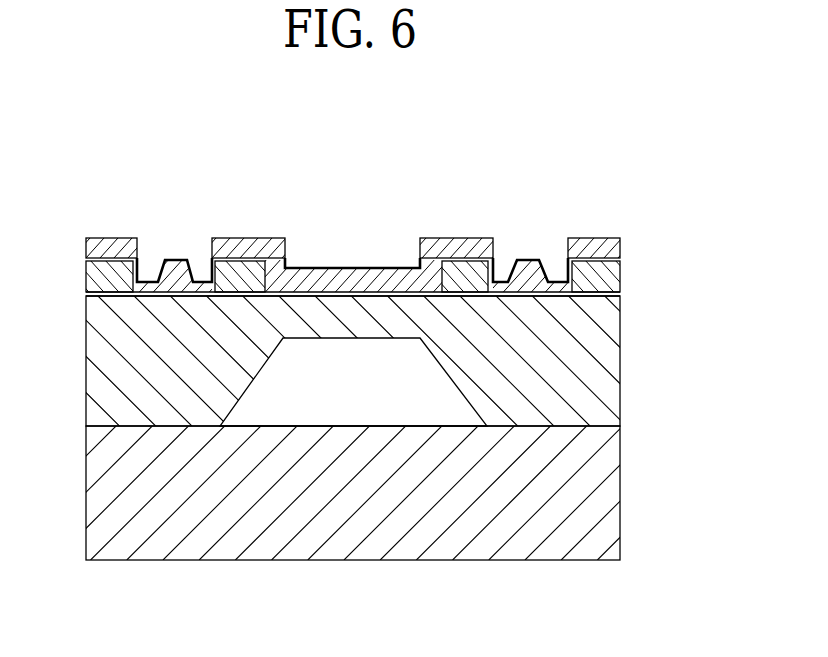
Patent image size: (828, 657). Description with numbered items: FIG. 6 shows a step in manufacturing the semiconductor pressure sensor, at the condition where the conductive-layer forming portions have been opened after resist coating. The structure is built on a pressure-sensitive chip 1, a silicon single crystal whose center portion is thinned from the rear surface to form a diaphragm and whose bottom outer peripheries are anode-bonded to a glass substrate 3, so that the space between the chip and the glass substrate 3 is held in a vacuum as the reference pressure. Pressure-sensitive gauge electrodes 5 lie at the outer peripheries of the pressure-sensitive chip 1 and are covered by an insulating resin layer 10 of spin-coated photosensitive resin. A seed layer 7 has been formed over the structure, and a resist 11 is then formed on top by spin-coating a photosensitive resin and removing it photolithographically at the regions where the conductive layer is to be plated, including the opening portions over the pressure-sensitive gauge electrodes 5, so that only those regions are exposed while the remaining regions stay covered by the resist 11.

The pressure-sensitive chip 1 is at (620, 372).
The glass substrate 3 is at (607, 492).
The pressure-sensitive gauge electrodes 5 is at (621, 318).
The seed layer 7 is at (627, 258).
The insulating resin layer 10 is at (620, 275).
The resist 11 is at (570, 238).